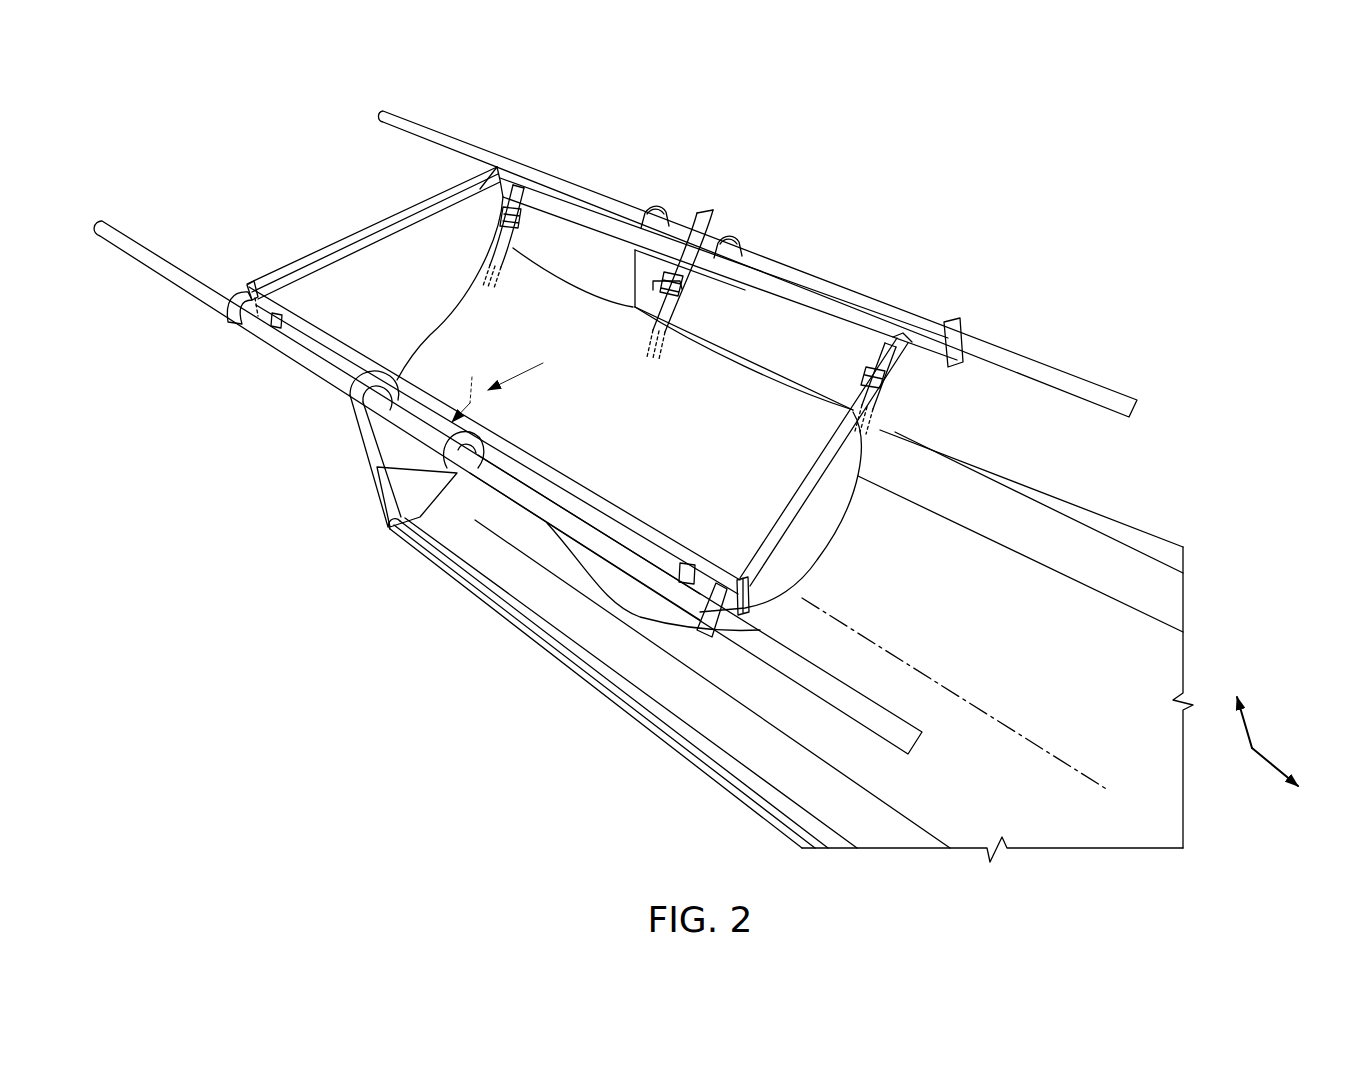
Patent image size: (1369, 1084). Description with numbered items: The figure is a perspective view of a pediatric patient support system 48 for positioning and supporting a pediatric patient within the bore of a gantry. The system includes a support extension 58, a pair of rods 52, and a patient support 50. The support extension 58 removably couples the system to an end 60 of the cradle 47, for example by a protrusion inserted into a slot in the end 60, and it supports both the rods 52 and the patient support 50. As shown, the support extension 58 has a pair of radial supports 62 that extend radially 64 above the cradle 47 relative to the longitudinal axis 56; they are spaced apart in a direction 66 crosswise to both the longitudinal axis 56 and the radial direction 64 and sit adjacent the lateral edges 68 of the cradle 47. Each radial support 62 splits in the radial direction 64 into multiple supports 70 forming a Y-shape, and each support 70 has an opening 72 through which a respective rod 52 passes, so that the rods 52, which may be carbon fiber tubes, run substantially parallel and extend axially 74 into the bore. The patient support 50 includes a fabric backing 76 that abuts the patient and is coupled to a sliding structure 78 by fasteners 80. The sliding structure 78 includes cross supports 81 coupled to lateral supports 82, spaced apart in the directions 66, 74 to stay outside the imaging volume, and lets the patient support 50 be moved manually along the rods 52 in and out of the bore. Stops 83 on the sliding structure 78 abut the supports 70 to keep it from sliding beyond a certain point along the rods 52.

The cradle 47 is at (560, 607).
The pediatric patient support system 48 is at (347, 428).
The patient support 50 is at (325, 245).
The rods 52 is at (440, 130).
The longitudinal axis 56 is at (1020, 731).
The support extension 58 is at (393, 433).
The end of the cradle 60 is at (403, 523).
The radial supports 62 is at (735, 243).
The radial direction 64 is at (1243, 720).
The crosswise direction 66 is at (523, 377).
The lateral edges 68 is at (610, 690).
The supports 70 is at (376, 366).
The opening 72 is at (480, 450).
The axial direction 74 is at (1272, 770).
The backing 76 is at (540, 290).
The sliding structure 78 is at (373, 221).
The fasteners 80 is at (870, 388).
The cross supports 81 is at (920, 392).
The lateral supports 82 is at (662, 553).
The stops 83 is at (232, 304).